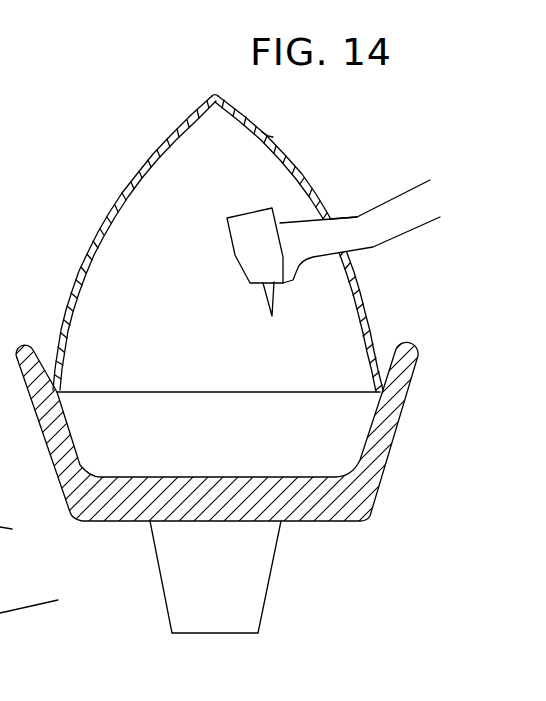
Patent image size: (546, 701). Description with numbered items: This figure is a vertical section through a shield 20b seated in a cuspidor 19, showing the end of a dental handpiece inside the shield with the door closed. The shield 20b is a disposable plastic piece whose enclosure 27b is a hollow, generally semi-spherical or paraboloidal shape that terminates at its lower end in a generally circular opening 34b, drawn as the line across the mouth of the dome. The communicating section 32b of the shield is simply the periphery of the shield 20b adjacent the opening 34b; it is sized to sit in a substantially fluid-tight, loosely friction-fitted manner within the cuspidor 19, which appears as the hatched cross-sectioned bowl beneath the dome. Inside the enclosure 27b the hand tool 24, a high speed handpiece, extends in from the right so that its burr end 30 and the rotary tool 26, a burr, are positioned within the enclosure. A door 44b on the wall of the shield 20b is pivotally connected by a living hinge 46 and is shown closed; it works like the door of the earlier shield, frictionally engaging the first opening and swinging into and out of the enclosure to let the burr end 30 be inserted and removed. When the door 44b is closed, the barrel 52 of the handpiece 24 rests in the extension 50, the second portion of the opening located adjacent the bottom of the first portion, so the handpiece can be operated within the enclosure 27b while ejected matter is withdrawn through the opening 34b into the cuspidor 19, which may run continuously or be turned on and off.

The cuspidor 19 is at (380, 470).
The shield 20b is at (180, 100).
The hand tool 24 is at (404, 235).
The rotary tool 26 is at (262, 303).
The enclosure 27b is at (147, 212).
The burr end 30 is at (230, 250).
The communicating section 32b is at (50, 355).
The opening 34b is at (247, 397).
The door 44b is at (293, 163).
The living hinge 46 is at (268, 131).
The extension 50 is at (340, 253).
The barrel 52 is at (340, 217).